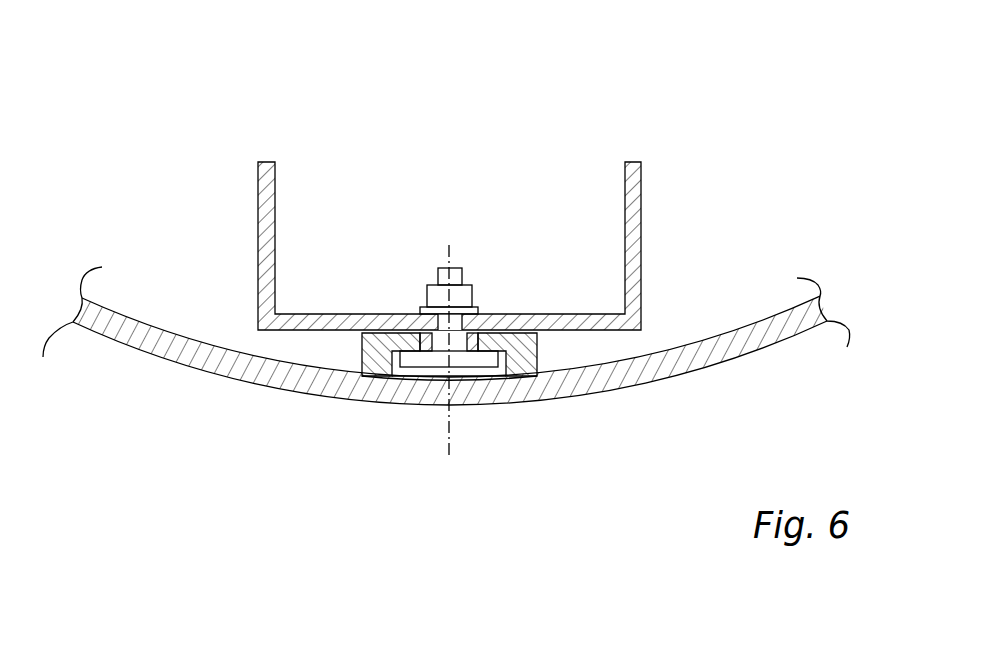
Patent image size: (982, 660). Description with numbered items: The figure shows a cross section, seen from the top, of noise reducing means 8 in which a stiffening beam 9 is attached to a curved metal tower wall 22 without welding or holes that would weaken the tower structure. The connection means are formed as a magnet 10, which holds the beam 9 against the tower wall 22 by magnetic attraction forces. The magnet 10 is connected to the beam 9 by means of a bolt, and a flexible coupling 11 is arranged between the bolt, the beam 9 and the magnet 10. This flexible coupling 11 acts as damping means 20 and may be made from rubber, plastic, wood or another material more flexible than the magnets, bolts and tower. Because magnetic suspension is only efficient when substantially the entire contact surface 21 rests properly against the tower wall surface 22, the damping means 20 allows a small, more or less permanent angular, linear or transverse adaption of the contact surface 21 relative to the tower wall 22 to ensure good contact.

The noise reducing means 8 is at (690, 113).
The stiffening beam 9 is at (632, 245).
The magnet 10 is at (522, 355).
The flexible coupling 11 is at (429, 352).
The damping means 20 is at (429, 352).
The contact surface 21 is at (367, 378).
The tower wall surface 22 is at (655, 368).